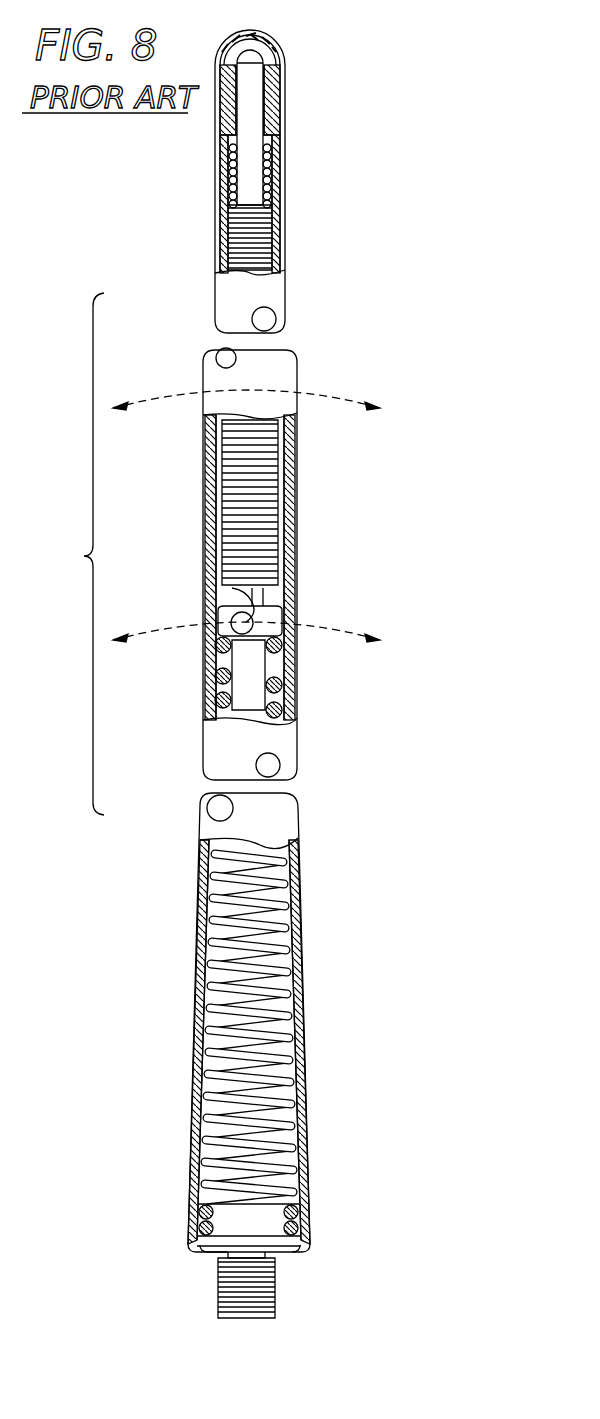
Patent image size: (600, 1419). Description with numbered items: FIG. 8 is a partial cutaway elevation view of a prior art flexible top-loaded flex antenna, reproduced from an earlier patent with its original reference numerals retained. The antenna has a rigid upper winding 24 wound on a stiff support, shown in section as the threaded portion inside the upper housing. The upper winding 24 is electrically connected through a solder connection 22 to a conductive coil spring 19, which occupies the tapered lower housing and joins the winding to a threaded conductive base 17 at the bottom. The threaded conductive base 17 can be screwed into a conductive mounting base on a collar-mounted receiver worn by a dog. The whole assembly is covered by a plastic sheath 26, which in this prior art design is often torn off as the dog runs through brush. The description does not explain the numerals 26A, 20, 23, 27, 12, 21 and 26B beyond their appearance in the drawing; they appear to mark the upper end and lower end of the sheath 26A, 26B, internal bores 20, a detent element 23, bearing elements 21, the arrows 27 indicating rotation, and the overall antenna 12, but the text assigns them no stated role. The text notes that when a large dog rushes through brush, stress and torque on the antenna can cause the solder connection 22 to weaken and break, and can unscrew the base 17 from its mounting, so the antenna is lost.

The upper end cap of housing 26A is at (268, 45).
The bore / passage 20 is at (252, 88).
The upper winding 24 is at (262, 482).
The detent ball 23 is at (236, 604).
The solder connection 22 is at (214, 668).
The rotation arrow 27 is at (336, 633).
The shaft assembly 12 is at (308, 662).
The plastic sheath 26 is at (300, 880).
The conductive coil spring 19 is at (280, 985).
The bearing 21 is at (285, 1237).
The lower end of housing 26B is at (212, 1253).
The threaded conductive base 17 is at (276, 1280).